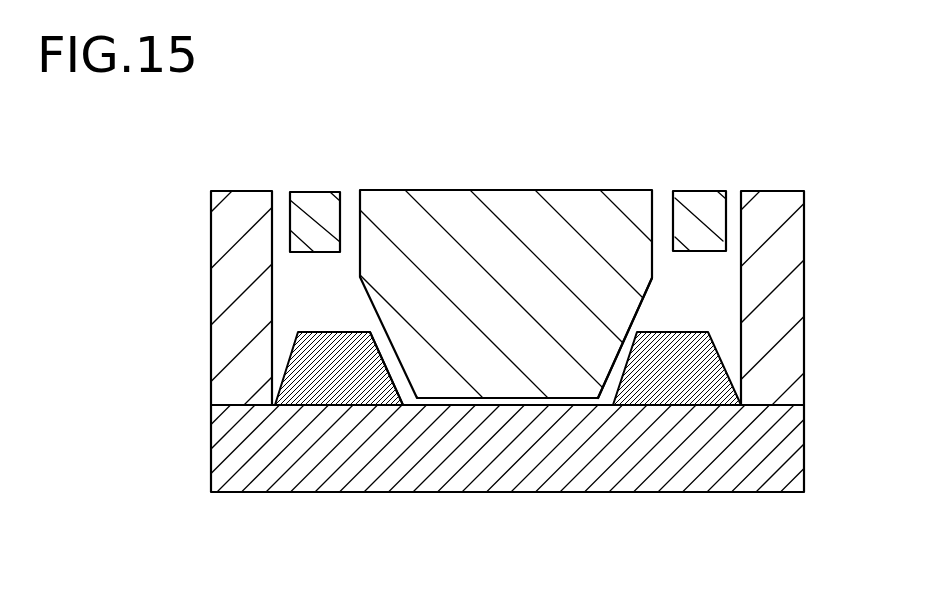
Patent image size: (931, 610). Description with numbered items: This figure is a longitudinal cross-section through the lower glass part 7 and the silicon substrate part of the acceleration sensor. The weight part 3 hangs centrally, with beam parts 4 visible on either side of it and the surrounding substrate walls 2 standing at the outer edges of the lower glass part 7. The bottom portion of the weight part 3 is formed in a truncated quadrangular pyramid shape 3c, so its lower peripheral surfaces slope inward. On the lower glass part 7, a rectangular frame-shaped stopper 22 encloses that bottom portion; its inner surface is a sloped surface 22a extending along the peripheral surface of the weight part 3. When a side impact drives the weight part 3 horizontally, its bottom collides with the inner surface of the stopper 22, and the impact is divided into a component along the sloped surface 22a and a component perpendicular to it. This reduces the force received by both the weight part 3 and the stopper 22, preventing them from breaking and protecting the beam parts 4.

The side wall 2 is at (244, 200).
The weight part 3 is at (511, 200).
The truncated quadrangular pyramid shape 3c is at (620, 363).
The beam parts 4 is at (312, 200).
The lower glass part 7 is at (740, 477).
The stopper 22 is at (325, 405).
The sloped surface 22a is at (392, 362).